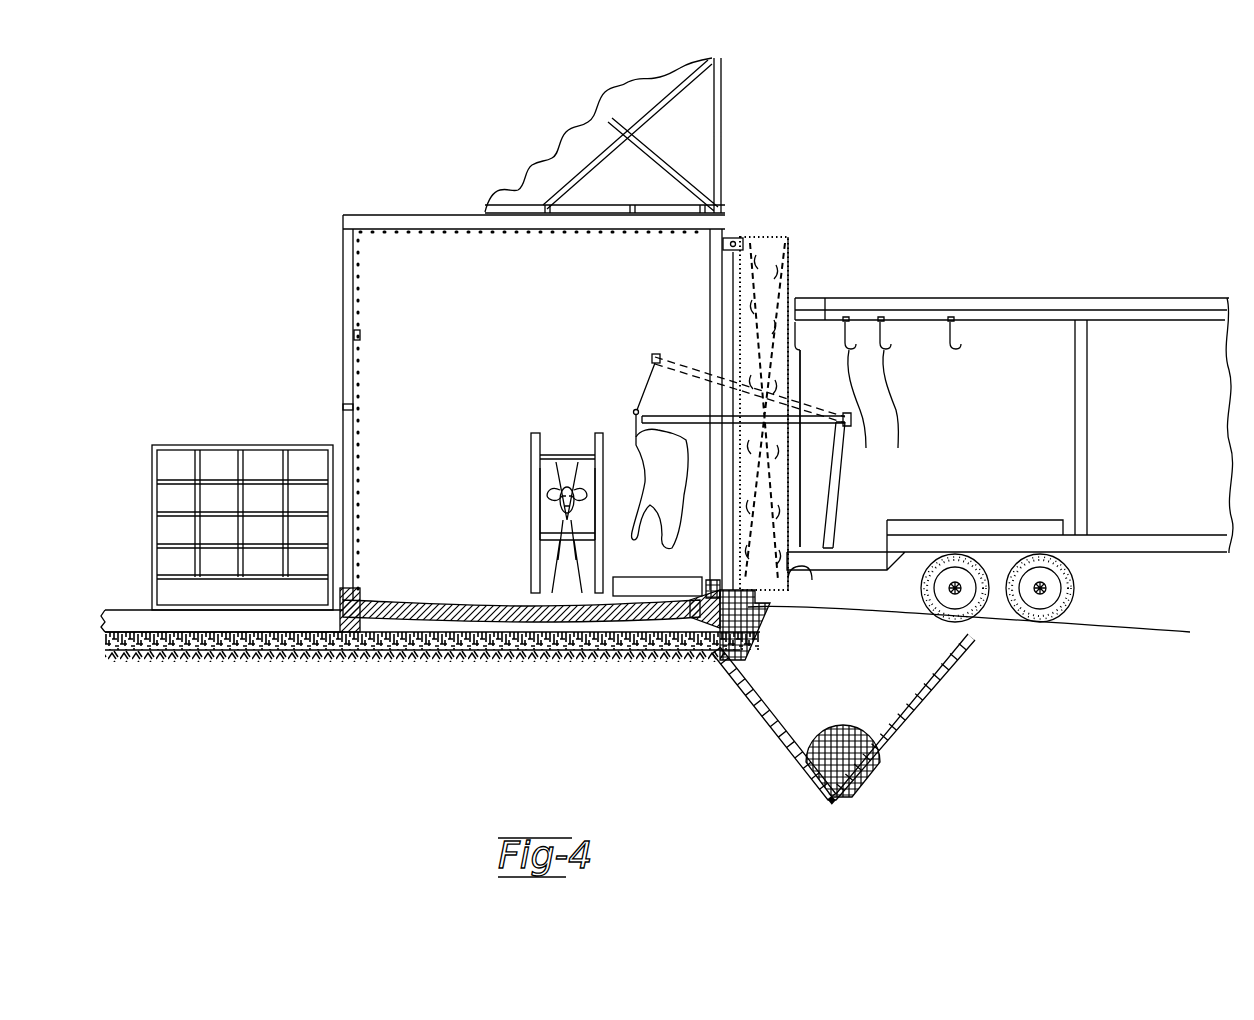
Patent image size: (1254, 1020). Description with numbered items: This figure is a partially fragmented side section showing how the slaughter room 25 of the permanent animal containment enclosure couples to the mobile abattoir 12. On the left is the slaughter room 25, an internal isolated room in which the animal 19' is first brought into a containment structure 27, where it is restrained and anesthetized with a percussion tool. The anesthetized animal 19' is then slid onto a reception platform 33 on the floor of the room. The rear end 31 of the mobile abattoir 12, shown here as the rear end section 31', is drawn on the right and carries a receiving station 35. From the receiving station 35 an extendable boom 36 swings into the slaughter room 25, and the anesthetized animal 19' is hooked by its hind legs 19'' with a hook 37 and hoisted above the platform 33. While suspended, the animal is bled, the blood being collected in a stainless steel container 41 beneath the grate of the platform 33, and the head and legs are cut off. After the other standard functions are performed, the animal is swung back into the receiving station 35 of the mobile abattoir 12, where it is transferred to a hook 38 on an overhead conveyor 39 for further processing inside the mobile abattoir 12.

The mobile abattoir 12 is at (1090, 284).
The animal 19' is at (599, 527).
The hind legs 19'' is at (611, 468).
The slaughter room 25 is at (338, 275).
The containment structure 27 is at (530, 470).
The rear end 31 is at (1011, 266).
The rear end section 31' is at (1012, 242).
The reception platform 33 is at (674, 600).
The receiving station 35 is at (896, 497).
The extendable boom 36 is at (655, 357).
The hook 37 is at (783, 237).
The hook 38 is at (903, 386).
The overhead conveyor 39 is at (1008, 321).
The stainless steel container 41 is at (625, 597).